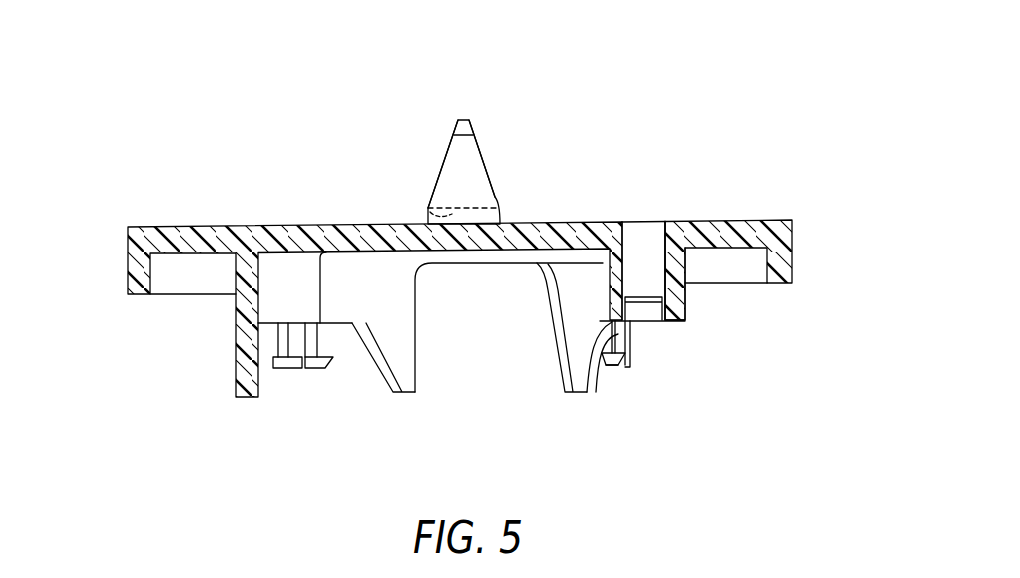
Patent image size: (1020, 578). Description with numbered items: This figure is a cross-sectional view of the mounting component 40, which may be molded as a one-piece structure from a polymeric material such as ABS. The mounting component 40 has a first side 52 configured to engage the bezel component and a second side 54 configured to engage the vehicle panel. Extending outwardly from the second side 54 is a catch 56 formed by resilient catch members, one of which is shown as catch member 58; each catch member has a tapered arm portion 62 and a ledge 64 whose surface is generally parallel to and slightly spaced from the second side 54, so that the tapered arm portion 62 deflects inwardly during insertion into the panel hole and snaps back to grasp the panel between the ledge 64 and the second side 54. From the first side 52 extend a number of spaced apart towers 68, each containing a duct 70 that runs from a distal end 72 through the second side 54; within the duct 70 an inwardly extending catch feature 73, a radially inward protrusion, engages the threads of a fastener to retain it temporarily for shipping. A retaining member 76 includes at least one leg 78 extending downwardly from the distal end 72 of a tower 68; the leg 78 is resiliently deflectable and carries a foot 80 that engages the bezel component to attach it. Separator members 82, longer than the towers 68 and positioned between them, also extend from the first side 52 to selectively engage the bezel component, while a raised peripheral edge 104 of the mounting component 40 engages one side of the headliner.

The mounting component 40 is at (447, 258).
The first side 52 is at (686, 250).
The second side 54 is at (723, 219).
The catch 56 is at (461, 170).
The resilient catch member 58 is at (442, 162).
The tapered arm portion 62 is at (470, 182).
The ledge 64 is at (430, 210).
The tower 68 is at (672, 323).
The duct 70 is at (652, 280).
The distal end 72 is at (648, 323).
The catch feature 73 is at (682, 300).
The retaining member 76 is at (624, 370).
The leg 78 is at (287, 338).
The foot 80 is at (290, 365).
The separator member 82 is at (243, 320).
The raised peripheral edge 104 is at (138, 295).